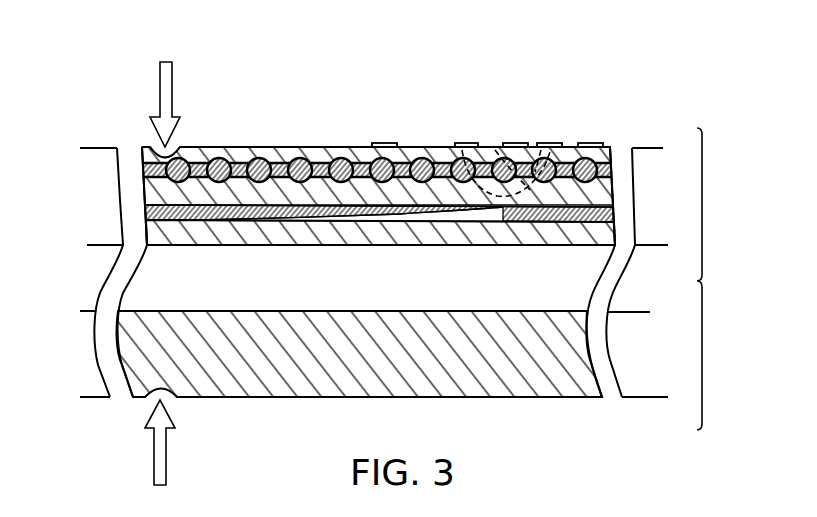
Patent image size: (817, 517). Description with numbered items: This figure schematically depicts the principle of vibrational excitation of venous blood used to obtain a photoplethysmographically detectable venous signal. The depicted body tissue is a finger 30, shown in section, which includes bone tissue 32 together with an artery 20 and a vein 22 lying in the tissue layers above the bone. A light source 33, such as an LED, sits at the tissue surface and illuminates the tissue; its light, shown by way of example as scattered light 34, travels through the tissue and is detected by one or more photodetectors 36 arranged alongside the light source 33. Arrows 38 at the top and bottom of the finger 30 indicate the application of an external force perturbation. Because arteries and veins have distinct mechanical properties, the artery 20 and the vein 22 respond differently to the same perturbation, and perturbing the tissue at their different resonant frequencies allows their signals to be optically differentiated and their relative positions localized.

The artery 20 is at (228, 203).
The vein 22 is at (306, 157).
The finger 30 is at (730, 281).
The bone tissue 32 is at (513, 288).
The light source 33 is at (467, 146).
The scattered light 34 is at (515, 162).
The photodetectors 36 is at (509, 146).
The arrows 38 is at (160, 89).